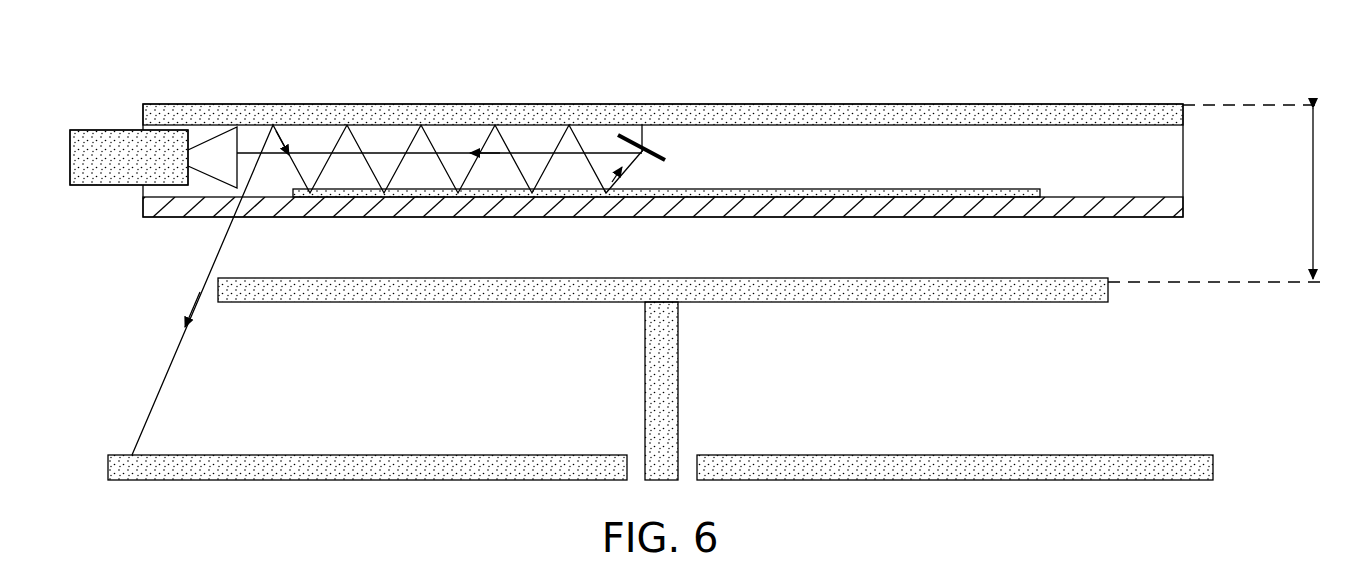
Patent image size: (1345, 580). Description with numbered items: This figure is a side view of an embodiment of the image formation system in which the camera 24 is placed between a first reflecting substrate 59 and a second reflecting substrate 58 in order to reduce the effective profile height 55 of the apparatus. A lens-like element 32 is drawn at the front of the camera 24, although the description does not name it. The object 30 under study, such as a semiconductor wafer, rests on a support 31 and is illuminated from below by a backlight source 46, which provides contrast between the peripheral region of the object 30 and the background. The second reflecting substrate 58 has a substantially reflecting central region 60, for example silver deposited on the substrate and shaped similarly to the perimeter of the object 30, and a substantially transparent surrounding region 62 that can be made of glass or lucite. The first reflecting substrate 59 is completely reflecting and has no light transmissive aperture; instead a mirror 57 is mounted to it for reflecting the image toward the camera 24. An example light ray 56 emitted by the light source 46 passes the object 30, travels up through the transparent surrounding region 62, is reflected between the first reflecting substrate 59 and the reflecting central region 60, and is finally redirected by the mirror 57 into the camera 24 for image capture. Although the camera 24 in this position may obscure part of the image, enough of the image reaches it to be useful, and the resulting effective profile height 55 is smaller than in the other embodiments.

The camera 24 is at (110, 128).
The collimating lens 32 is at (213, 138).
The mirror 57 is at (630, 143).
The first reflecting substrate 59 is at (1068, 102).
The substantially reflecting central region 60 is at (1000, 190).
The substantially transparent surrounding region 62 is at (1112, 198).
The second reflecting substrate 58 is at (659, 204).
The object 30 is at (990, 278).
The support 31 is at (645, 395).
The backlight source 46 is at (362, 455).
The light ray 56 is at (190, 312).
The effective profile height EP_H 55 is at (1313, 225).